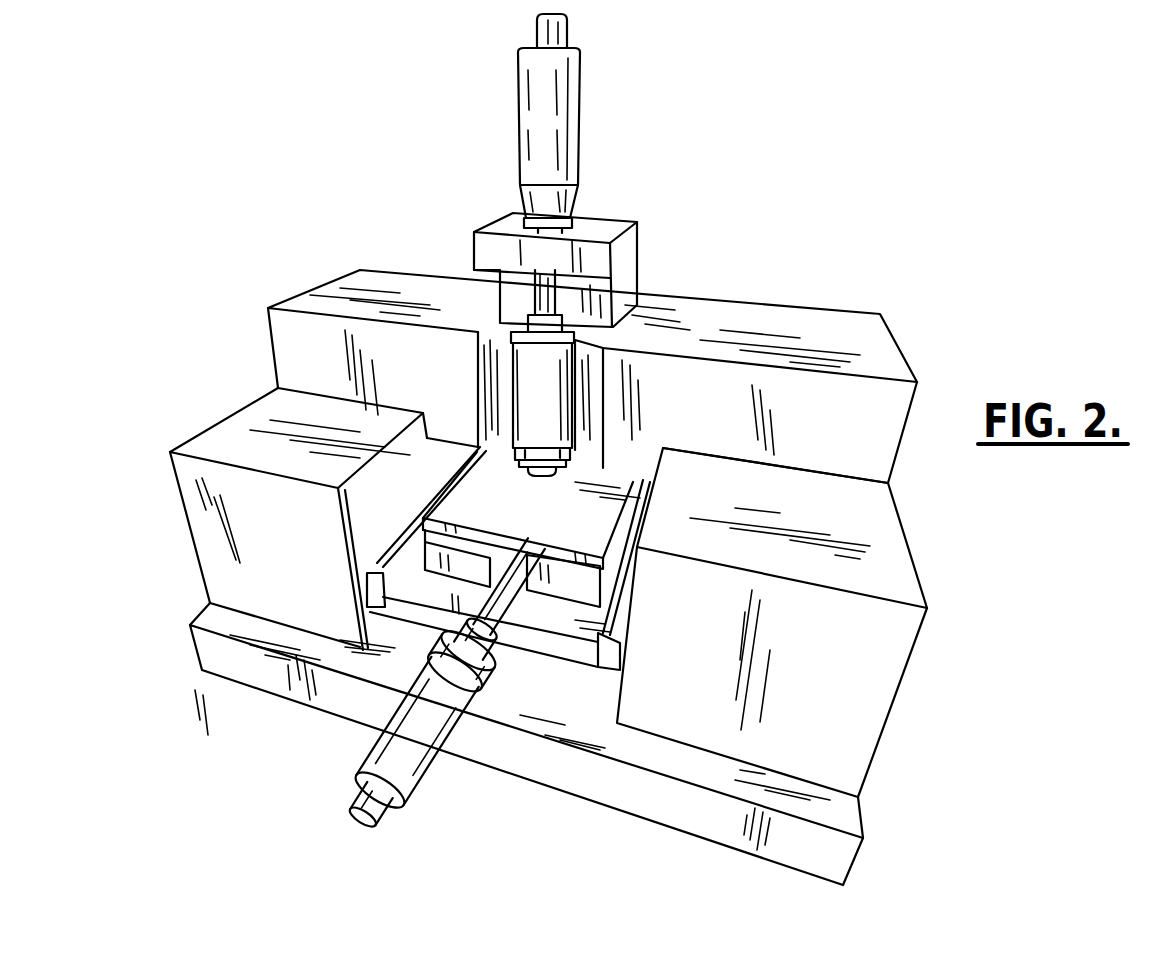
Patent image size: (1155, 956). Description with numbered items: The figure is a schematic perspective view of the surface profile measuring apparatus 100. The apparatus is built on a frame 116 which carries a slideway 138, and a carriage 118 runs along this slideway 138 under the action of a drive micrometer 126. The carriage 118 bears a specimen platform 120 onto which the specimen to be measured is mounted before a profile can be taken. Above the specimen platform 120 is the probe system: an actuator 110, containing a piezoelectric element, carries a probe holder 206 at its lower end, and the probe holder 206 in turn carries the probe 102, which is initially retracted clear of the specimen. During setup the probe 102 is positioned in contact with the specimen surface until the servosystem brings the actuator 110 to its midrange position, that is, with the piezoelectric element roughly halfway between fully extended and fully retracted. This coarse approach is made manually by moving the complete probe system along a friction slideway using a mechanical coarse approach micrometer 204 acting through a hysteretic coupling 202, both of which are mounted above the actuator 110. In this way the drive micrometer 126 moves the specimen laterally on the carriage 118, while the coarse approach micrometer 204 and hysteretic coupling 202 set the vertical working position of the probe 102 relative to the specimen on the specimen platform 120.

The surface profile measuring apparatus 100 is at (296, 242).
The probe 102 is at (528, 484).
The actuator 110 is at (556, 385).
The frame 116 is at (296, 553).
The carriage 118 is at (460, 565).
The specimen platform 120 is at (586, 533).
The drive micrometer 126 is at (450, 711).
The slideway 138 is at (582, 671).
The hysteretic coupling 202 is at (598, 298).
The coarse approach micrometer 204 is at (562, 110).
The probe holder 206 is at (500, 458).